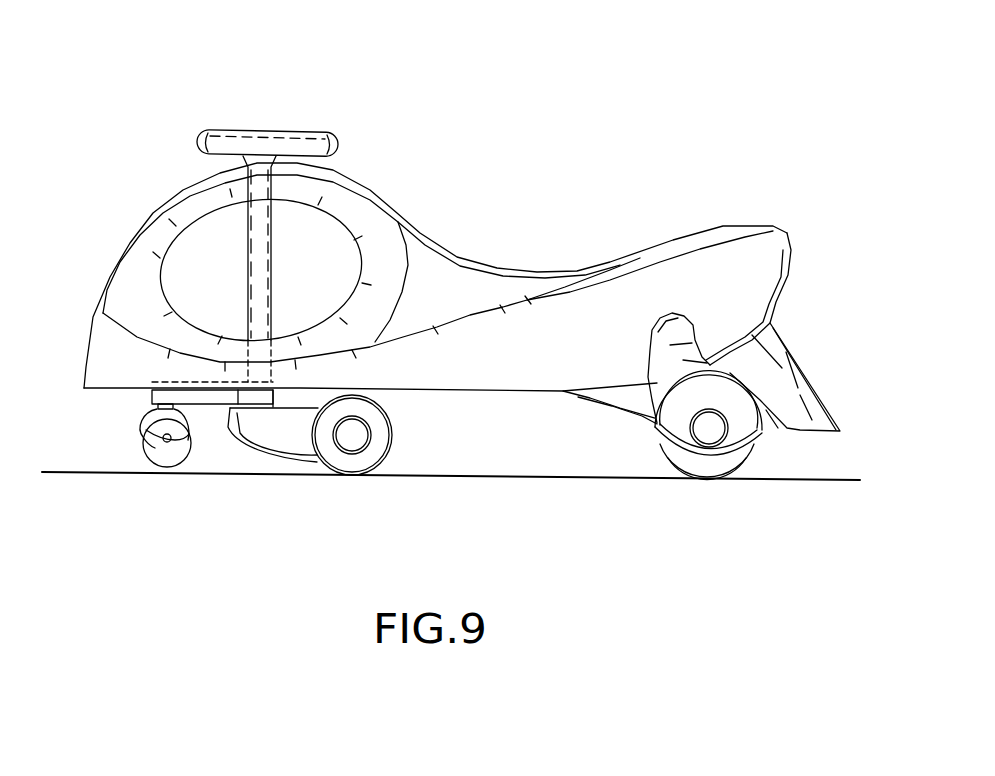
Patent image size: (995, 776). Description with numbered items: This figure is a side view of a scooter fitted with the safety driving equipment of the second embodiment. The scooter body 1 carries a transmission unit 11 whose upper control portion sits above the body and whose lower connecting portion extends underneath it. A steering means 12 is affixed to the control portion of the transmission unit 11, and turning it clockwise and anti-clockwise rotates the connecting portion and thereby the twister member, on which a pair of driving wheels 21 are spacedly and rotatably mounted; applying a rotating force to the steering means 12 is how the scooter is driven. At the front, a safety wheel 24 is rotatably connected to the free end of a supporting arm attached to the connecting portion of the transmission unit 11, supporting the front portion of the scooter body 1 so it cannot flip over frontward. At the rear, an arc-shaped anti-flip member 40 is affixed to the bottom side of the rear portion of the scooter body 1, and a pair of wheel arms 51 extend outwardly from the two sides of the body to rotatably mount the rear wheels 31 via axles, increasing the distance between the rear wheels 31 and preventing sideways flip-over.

The scooter body 1 is at (485, 277).
The transmission unit 11 is at (258, 265).
The steering means 12 is at (248, 140).
The driving wheel 21 is at (380, 430).
The safety wheel 24 is at (160, 453).
The rear wheel 31 is at (690, 456).
The anti-flip member 40 is at (790, 387).
The wheel arm 51 is at (792, 432).